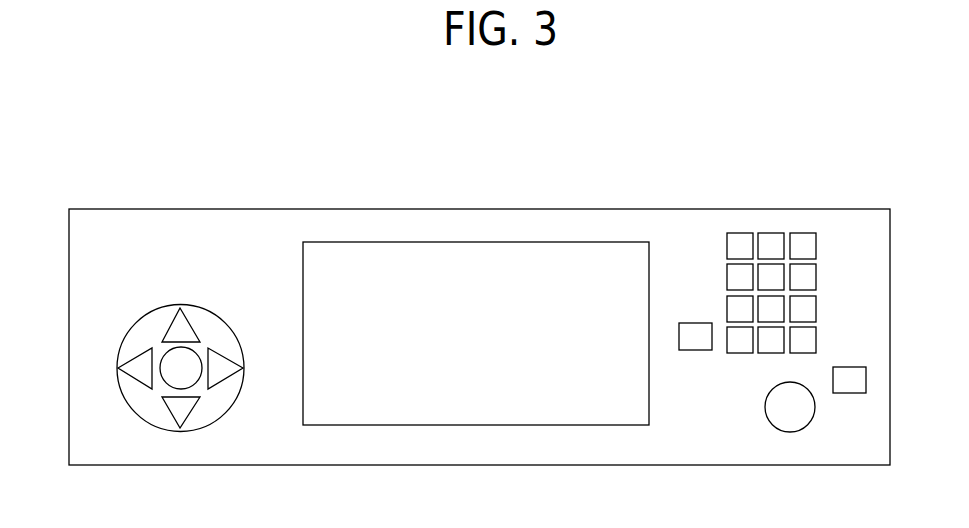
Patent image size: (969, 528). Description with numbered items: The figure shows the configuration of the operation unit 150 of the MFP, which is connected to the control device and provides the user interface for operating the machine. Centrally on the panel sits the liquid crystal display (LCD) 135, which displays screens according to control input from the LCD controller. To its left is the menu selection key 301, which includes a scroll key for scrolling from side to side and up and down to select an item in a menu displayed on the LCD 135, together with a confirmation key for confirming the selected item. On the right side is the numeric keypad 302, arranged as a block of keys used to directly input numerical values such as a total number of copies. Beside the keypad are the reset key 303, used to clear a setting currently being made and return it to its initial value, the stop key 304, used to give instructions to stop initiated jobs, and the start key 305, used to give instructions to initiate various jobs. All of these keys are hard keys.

The operation unit 150 is at (416, 209).
The liquid crystal display (LCD) 135 is at (508, 242).
The menu selection key 301 is at (180, 307).
The numeric keypad 302 is at (745, 232).
The reset key 303 is at (693, 323).
The stop key 304 is at (848, 367).
The start key 305 is at (765, 410).